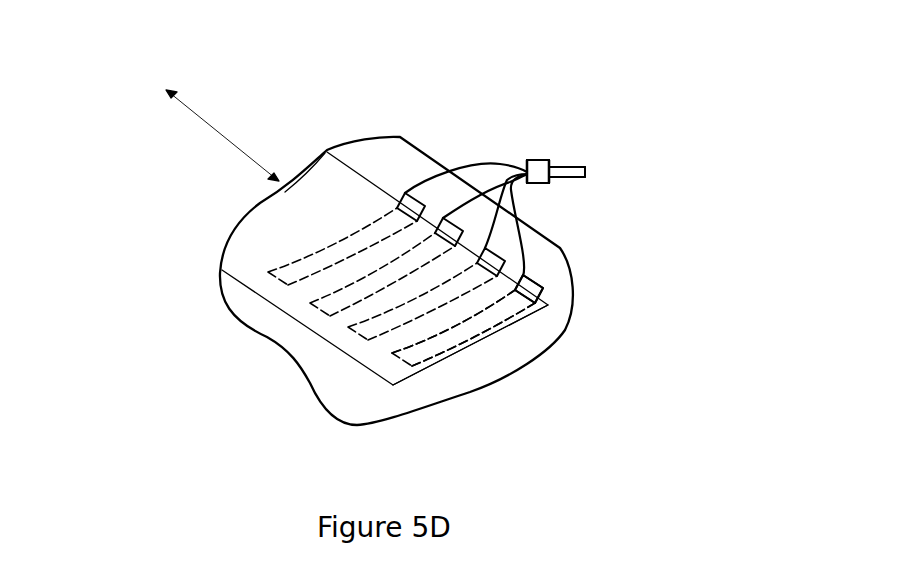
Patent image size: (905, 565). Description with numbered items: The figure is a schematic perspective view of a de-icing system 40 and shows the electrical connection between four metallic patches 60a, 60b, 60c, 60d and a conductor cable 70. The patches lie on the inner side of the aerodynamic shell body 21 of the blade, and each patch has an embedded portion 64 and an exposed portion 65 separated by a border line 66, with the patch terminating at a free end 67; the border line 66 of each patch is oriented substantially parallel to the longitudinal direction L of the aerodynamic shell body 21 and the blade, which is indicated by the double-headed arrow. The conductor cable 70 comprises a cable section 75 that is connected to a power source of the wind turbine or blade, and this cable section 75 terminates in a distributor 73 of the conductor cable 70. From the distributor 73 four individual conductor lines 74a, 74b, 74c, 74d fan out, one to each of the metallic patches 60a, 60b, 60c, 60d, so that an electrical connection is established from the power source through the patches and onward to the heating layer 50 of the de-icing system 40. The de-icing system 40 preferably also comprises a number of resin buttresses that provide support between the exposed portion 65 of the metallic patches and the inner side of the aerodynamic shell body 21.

The longitudinal direction L is at (177, 97).
The aerodynamic shell body 21 is at (375, 157).
The de-icing system 40 is at (648, 132).
The heating layer 50 is at (287, 232).
The first metallic patch 60a is at (460, 348).
The second metallic patch 60b is at (348, 327).
The third metallic patch 60c is at (310, 303).
The fourth metallic patch 60d is at (268, 272).
The embedded portion 64 is at (510, 328).
The exposed portion 65 is at (535, 298).
The border line 66 is at (543, 288).
The free end 67 is at (545, 292).
The conductor cable 70 is at (546, 152).
The distributor 73 is at (537, 158).
The first conductor line 74a is at (520, 244).
The second conductor line 74b is at (513, 201).
The third conductor line 74c is at (497, 185).
The fourth conductor line 74d is at (455, 176).
The cable section 75 is at (580, 167).